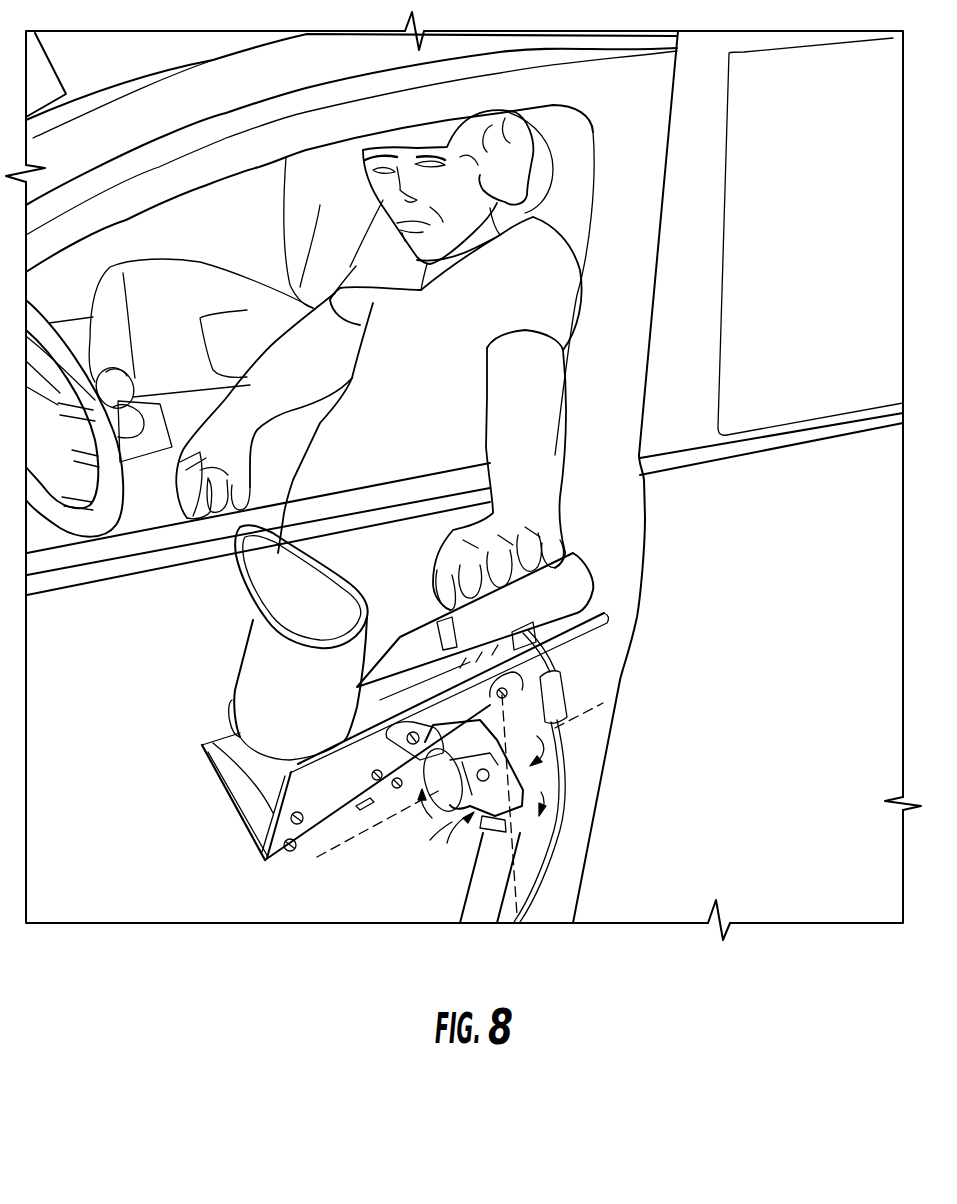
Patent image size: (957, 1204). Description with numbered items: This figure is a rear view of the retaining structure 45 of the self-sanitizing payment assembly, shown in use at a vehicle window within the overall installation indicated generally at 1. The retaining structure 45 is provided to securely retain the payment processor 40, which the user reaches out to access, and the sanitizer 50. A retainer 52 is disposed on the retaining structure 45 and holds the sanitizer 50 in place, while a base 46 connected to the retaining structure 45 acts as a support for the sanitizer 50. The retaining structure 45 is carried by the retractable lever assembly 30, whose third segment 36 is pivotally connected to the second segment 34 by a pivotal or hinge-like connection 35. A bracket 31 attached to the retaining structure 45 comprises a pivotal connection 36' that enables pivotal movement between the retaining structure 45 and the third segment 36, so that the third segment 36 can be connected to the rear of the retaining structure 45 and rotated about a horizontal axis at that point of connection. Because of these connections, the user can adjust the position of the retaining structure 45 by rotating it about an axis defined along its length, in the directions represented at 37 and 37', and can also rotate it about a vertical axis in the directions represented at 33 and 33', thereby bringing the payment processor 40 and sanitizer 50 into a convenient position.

The vehicle 1 is at (660, 540).
The retractable lever assembly 30 is at (390, 906).
The bracket 31 is at (375, 808).
The direction of rotation about vertical axis 33 is at (589, 808).
The direction of rotation about vertical axis 33' is at (454, 845).
The second segment 34 is at (480, 900).
The pivotal connection 35 is at (517, 827).
The third segment 36 is at (533, 768).
The pivotal connection 36' is at (426, 863).
The direction of rotation about longitudinal axis 37 is at (595, 749).
The direction of rotation about longitudinal axis 37' is at (411, 814).
The payment processor 40 is at (580, 575).
The retaining structure 45 is at (598, 637).
The base 46 is at (214, 748).
The sanitizer 50 is at (257, 670).
The retainer 52 is at (273, 766).